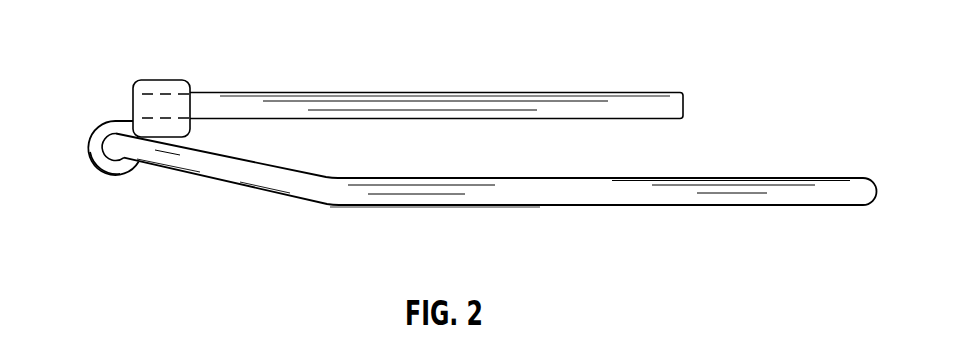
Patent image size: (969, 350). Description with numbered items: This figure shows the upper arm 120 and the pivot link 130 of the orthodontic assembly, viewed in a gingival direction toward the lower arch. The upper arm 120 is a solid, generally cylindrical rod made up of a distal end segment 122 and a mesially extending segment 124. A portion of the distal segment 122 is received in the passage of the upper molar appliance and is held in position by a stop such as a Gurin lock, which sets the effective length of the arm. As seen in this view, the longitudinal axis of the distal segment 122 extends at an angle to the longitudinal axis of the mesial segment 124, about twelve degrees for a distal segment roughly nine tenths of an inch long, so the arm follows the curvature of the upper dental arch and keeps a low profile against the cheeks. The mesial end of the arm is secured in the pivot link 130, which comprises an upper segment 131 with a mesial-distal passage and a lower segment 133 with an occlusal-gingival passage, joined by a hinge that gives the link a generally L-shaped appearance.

The upper arm 120 is at (857, 188).
The distal end segment 122 is at (722, 197).
The mesially extending segment 124 is at (232, 176).
The pivot link 130 is at (109, 122).
The upper segment 131 is at (163, 79).
The lower segment 133 is at (118, 173).